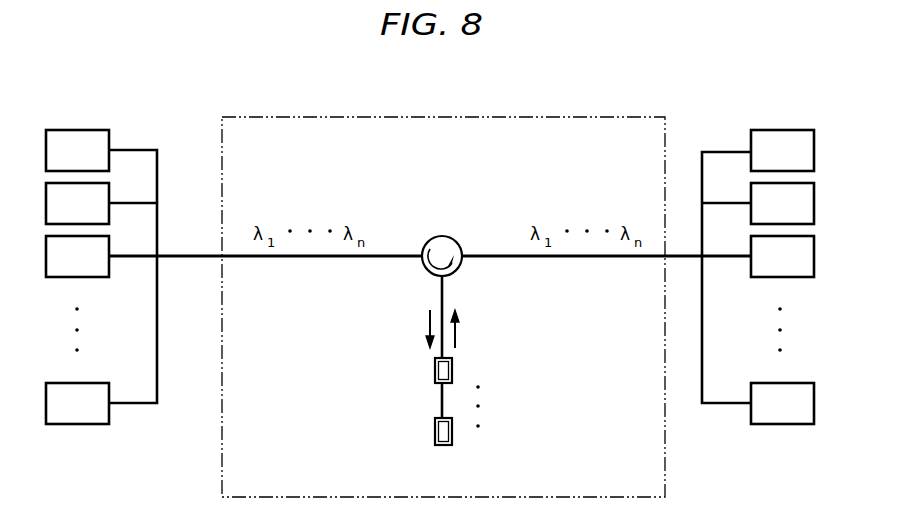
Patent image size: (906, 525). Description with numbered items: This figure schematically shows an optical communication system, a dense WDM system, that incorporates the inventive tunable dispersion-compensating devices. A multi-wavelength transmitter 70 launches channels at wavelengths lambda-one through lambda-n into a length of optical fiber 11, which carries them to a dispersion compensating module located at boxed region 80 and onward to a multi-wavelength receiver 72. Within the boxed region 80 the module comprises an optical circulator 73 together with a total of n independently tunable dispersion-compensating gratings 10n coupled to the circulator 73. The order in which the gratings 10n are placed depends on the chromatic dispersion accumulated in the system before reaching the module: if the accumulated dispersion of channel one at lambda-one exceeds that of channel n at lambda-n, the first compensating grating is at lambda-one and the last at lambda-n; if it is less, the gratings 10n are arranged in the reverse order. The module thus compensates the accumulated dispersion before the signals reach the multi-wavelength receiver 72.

The boxed region 80 is at (580, 117).
The length of optical fiber 11 is at (182, 256).
The multi-wavelength transmitter 70 is at (137, 150).
The multi-wavelength receiver 72 is at (718, 405).
The optical circulator 73 is at (438, 237).
The independently tunable dispersion-compensating gratings 10n is at (427, 402).